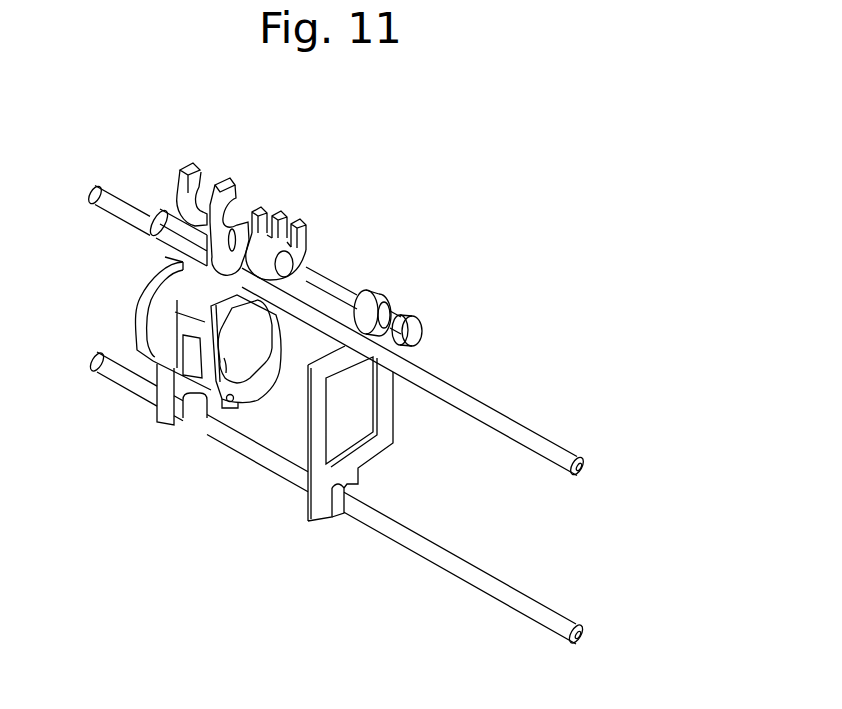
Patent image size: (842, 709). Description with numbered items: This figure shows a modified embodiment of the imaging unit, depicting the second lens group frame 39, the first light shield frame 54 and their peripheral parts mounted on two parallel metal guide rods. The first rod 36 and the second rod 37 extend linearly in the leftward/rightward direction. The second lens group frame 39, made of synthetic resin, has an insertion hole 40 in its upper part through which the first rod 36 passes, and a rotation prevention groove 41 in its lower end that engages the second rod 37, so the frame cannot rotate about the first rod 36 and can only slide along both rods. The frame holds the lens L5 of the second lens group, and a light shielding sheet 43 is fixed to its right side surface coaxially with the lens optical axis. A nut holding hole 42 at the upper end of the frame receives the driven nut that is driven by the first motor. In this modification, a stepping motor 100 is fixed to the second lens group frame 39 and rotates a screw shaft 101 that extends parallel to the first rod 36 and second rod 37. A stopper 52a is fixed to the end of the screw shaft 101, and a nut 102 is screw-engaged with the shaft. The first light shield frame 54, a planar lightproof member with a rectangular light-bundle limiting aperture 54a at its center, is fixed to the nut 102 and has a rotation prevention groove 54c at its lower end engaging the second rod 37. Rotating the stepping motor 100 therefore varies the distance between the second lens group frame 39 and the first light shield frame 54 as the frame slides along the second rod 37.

The first rod 36 is at (478, 404).
The second rod 37 is at (425, 542).
The second lens group frame 39 is at (142, 330).
The insertion hole 40 is at (249, 200).
The rotation prevention groove 41 is at (182, 410).
The nut holding hole 42 is at (208, 190).
The light shielding sheet 43 is at (218, 402).
The stopper 52a is at (420, 332).
The first light shield frame 54 is at (331, 470).
The light-bundle limiting aperture 54a is at (323, 447).
The rotation prevention groove 54c is at (342, 507).
The stepping motor 100 is at (313, 242).
The screw shaft 101 is at (330, 288).
The nut 102 is at (380, 293).
The lens L5 is at (210, 405).